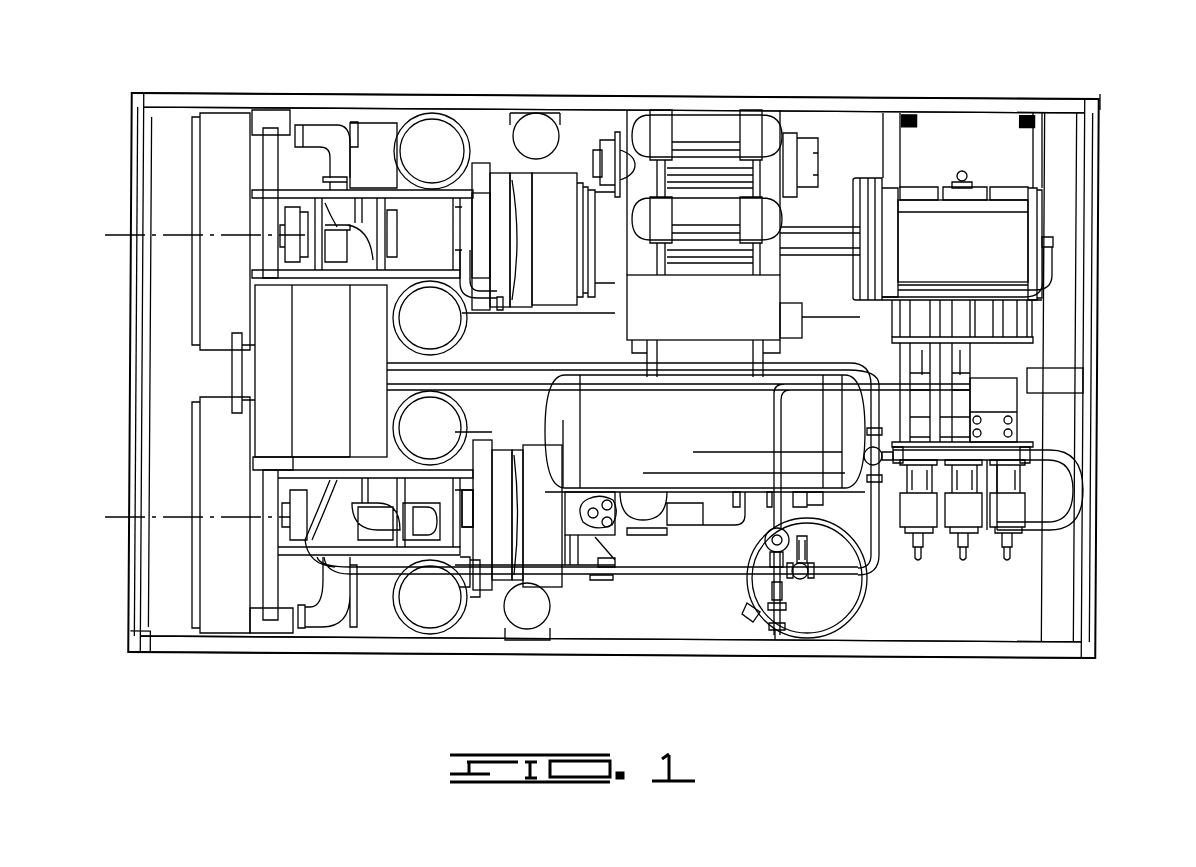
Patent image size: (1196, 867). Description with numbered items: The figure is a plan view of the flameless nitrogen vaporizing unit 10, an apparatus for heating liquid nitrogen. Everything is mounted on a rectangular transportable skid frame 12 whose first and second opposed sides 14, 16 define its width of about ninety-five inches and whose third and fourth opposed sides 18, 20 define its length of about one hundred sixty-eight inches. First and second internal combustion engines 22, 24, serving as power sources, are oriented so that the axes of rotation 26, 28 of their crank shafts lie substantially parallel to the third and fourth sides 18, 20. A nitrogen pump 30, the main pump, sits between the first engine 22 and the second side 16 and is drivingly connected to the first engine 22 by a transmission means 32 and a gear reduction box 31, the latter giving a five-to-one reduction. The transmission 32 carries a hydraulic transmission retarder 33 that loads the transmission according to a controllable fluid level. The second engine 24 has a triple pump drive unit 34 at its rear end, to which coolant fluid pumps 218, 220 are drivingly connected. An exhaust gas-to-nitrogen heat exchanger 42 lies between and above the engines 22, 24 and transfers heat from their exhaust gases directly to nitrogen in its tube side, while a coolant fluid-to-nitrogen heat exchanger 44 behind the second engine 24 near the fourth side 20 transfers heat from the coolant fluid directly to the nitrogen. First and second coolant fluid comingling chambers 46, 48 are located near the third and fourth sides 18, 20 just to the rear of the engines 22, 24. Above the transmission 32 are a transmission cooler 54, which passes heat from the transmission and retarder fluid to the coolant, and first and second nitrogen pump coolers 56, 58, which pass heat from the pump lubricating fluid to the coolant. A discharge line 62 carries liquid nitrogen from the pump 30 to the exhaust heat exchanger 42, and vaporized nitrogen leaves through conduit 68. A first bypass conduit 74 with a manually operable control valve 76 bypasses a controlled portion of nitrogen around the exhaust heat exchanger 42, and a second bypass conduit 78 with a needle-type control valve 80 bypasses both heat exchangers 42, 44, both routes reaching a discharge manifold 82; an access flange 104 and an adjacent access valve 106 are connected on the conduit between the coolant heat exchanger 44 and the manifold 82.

The flameless nitrogen vaporizing unit 10 is at (1112, 88).
The skid frame 12 is at (1104, 568).
The first side 14 is at (132, 402).
The second side 16 is at (1085, 423).
The third side 18 is at (606, 97).
The fourth side 20 is at (545, 641).
The first internal combustion engine 22 is at (373, 157).
The second internal combustion engine 24 is at (373, 590).
The axis of rotation 26 is at (177, 235).
The axis of rotation 28 is at (177, 515).
The nitrogen pump 30 is at (1008, 235).
The gear reduction box 31 is at (872, 188).
The transmission means 32 is at (529, 195).
The hydraulic transmission retarder 33 is at (555, 183).
The triple pump drive unit 34 is at (543, 555).
The exhaust gas-to-nitrogen heat exchanger 42 is at (270, 355).
The coolant fluid-to-nitrogen heat exchanger 44 is at (808, 608).
The first coolant fluid comingling chamber 46 is at (537, 128).
The second coolant fluid comingling chamber 48 is at (528, 612).
The transmission cooler 54 is at (793, 140).
The first nitrogen pump cooler 56 is at (688, 122).
The second nitrogen pump cooler 58 is at (697, 213).
The discharge line 62 is at (508, 366).
The conduit 68 is at (307, 493).
The first bypass conduit means 74 is at (871, 512).
The manually operable control valve 76 is at (863, 455).
The second bypass conduit means 78 is at (775, 425).
The manually operable control valve 80 is at (1010, 385).
The discharge manifold 82 is at (765, 535).
The access flange 104 is at (775, 637).
The access valve 106 is at (770, 591).
The first coolant fluid pump 218 is at (612, 562).
The second coolant fluid pump 220 is at (620, 527).